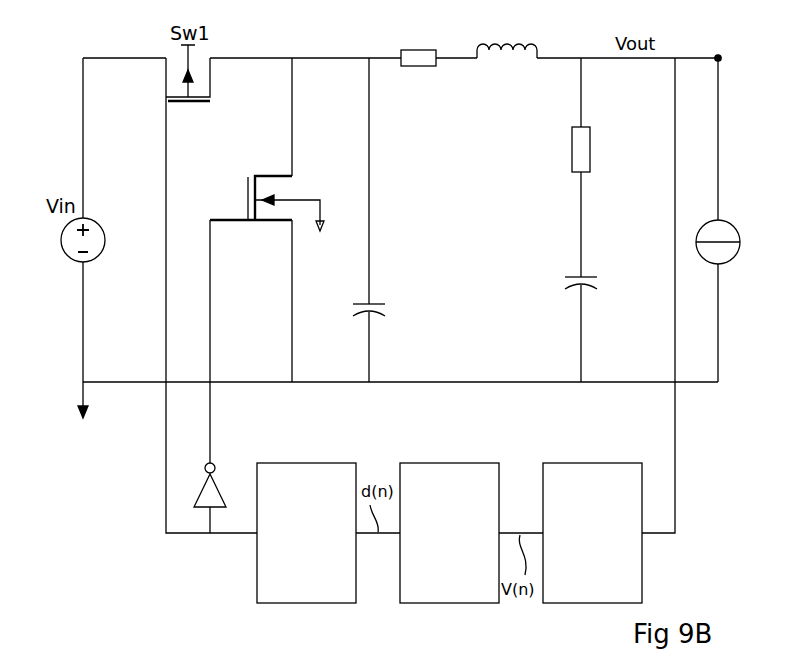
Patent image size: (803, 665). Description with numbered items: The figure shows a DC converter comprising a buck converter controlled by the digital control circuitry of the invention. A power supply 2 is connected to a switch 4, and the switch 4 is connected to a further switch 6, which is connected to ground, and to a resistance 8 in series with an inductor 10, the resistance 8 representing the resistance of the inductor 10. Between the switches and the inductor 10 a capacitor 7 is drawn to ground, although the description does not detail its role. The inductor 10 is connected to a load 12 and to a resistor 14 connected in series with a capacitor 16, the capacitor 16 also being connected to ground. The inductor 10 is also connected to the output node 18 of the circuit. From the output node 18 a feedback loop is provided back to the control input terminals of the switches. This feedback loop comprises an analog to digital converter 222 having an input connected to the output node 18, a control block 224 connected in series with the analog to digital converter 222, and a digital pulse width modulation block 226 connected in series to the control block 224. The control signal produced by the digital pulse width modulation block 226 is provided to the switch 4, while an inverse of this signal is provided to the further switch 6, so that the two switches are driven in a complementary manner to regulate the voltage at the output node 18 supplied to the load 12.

The power supply 2 is at (104, 236).
The switch 4 is at (212, 78).
The further switch 6 is at (280, 188).
The capacitor Ca 7 is at (375, 302).
The resistance 8 is at (420, 66).
The inductor 10 is at (505, 62).
The load 12 is at (710, 218).
The resistor 14 is at (590, 155).
The capacitor 16 is at (577, 276).
The output node 18 is at (716, 55).
The analog to digital converter 222 is at (613, 470).
The control block 224 is at (458, 470).
The digital pulse width modulation block 226 is at (305, 473).